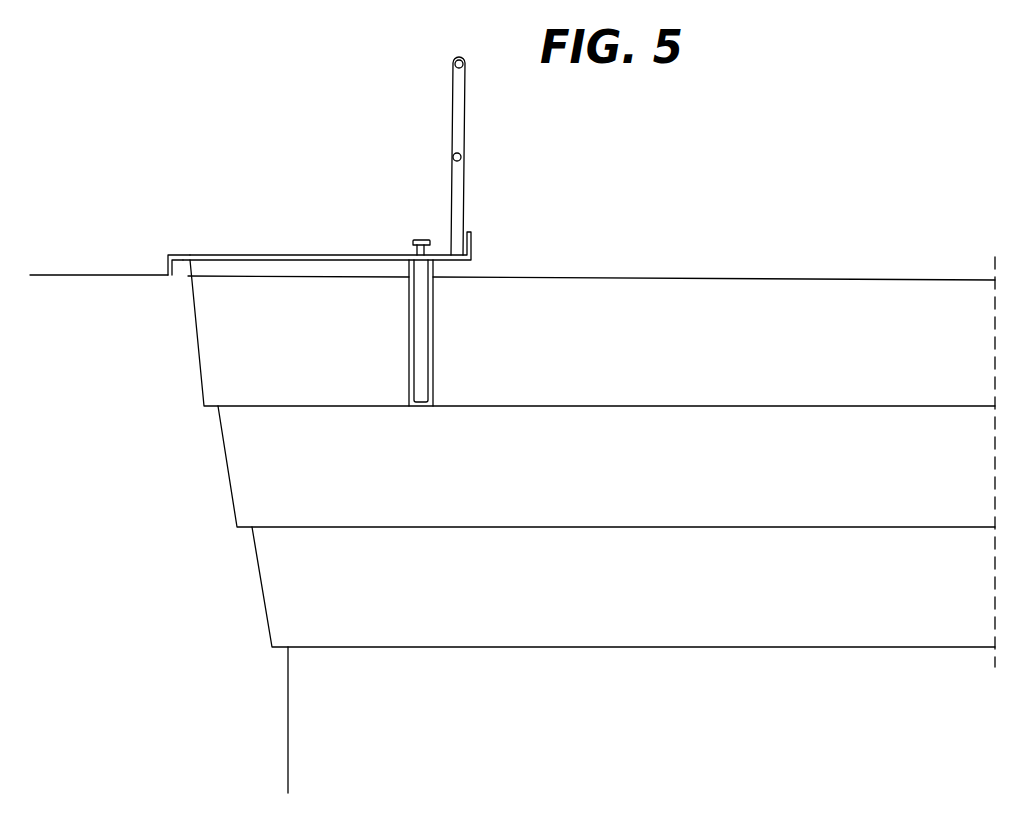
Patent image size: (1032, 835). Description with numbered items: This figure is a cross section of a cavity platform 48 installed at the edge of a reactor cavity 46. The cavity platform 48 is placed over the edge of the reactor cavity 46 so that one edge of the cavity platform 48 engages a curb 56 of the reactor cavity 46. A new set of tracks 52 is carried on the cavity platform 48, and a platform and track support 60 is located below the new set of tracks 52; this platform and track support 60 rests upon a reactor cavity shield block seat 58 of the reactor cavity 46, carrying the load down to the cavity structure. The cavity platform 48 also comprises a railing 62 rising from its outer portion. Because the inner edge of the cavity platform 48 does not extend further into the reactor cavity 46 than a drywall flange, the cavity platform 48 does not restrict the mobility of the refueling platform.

The vehicle body / base structure 46 is at (656, 717).
The mounting plate 48 is at (309, 243).
The fastener bolt 52 is at (415, 221).
The retaining clip 56 is at (180, 264).
The body panel / upper tier 58 is at (775, 398).
The channel bracket 60 is at (445, 350).
The upright post 62 is at (476, 100).